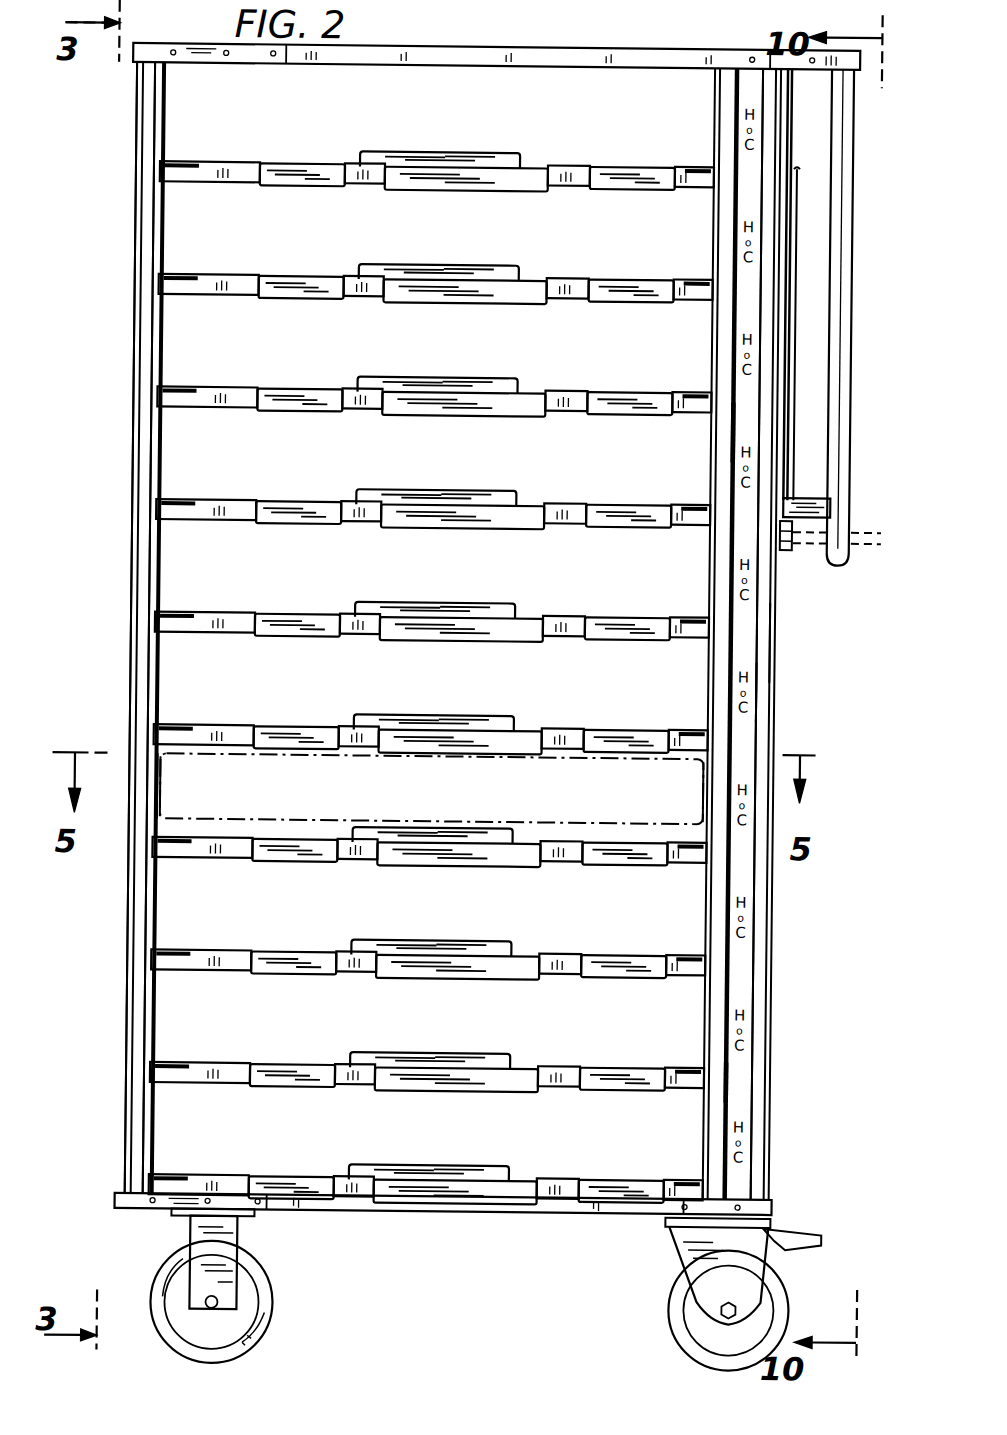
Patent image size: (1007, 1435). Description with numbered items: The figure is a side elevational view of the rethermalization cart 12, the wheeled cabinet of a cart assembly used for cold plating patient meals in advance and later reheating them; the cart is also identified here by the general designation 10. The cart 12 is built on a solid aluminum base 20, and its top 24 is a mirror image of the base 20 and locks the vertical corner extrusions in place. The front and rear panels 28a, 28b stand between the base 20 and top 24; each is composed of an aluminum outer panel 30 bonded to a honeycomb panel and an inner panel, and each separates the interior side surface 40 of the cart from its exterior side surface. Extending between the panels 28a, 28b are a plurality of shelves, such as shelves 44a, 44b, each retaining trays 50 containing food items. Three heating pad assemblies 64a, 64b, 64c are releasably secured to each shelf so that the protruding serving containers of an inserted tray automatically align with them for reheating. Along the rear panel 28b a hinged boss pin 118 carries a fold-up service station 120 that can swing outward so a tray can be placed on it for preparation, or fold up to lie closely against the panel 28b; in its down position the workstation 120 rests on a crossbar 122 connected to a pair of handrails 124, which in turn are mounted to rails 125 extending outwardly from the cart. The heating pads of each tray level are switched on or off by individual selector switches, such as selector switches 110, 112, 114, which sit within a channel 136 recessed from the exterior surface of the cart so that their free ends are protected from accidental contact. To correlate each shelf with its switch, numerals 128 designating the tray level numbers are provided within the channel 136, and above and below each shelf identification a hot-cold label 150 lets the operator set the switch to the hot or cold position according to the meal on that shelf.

The cart 10 is at (497, 47).
The rethermalization cart 12 is at (133, 582).
The base 20 is at (387, 1214).
The top 24 is at (392, 51).
The front panel 28a is at (133, 430).
The rear panel 28b is at (773, 1004).
The aluminum outer panel 30 is at (133, 699).
The interior side surface 40 is at (705, 780).
The shelf 44a is at (429, 876).
The shelf 44b is at (223, 737).
The tray 50 is at (160, 799).
The heating pad assembly 64a is at (293, 866).
The heating pad assembly 64b is at (425, 867).
The heating pad assembly 64c is at (613, 868).
The selector switch 110 is at (761, 873).
The selector switch 112 is at (758, 693).
The selector switch 114 is at (753, 638).
The hinged boss pin 118 is at (785, 548).
The fold-up service station 120 is at (792, 180).
The crossbar 122 is at (834, 568).
The handrail 124 is at (826, 119).
The rail 125 is at (815, 491).
The numeral 128 is at (745, 1085).
The channel 136 is at (750, 426).
The hot-cold label 150 is at (748, 903).